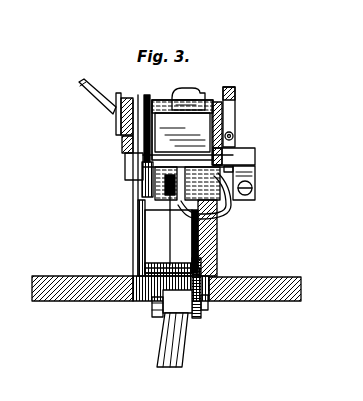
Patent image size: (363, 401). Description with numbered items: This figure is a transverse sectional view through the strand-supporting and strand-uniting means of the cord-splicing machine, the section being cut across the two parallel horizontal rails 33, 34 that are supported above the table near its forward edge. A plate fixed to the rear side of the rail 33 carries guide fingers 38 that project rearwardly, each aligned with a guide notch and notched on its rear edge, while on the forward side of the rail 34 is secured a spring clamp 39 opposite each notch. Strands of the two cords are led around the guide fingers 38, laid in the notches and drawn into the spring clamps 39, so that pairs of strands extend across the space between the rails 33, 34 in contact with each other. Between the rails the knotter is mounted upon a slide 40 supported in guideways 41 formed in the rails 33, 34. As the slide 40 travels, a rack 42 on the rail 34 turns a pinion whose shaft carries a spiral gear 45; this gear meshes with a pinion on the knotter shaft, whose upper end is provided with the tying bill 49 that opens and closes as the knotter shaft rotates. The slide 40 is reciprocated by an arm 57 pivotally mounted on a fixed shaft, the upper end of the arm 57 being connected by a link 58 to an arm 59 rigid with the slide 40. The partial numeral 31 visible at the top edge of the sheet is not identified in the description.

The sheet number 31 is at (217, 4).
The horizontal rail 33 is at (125, 113).
The horizontal rail 34 is at (220, 121).
The guide finger 38 is at (113, 102).
The spring clamp 39 is at (237, 98).
The slide 40 is at (140, 159).
The guideway 41 is at (123, 138).
The rack 42 is at (236, 207).
The spiral gear 45 is at (167, 202).
The tying bill 49 is at (187, 90).
The arm 57 is at (180, 353).
The link 58 is at (212, 288).
The arm 59 is at (152, 245).